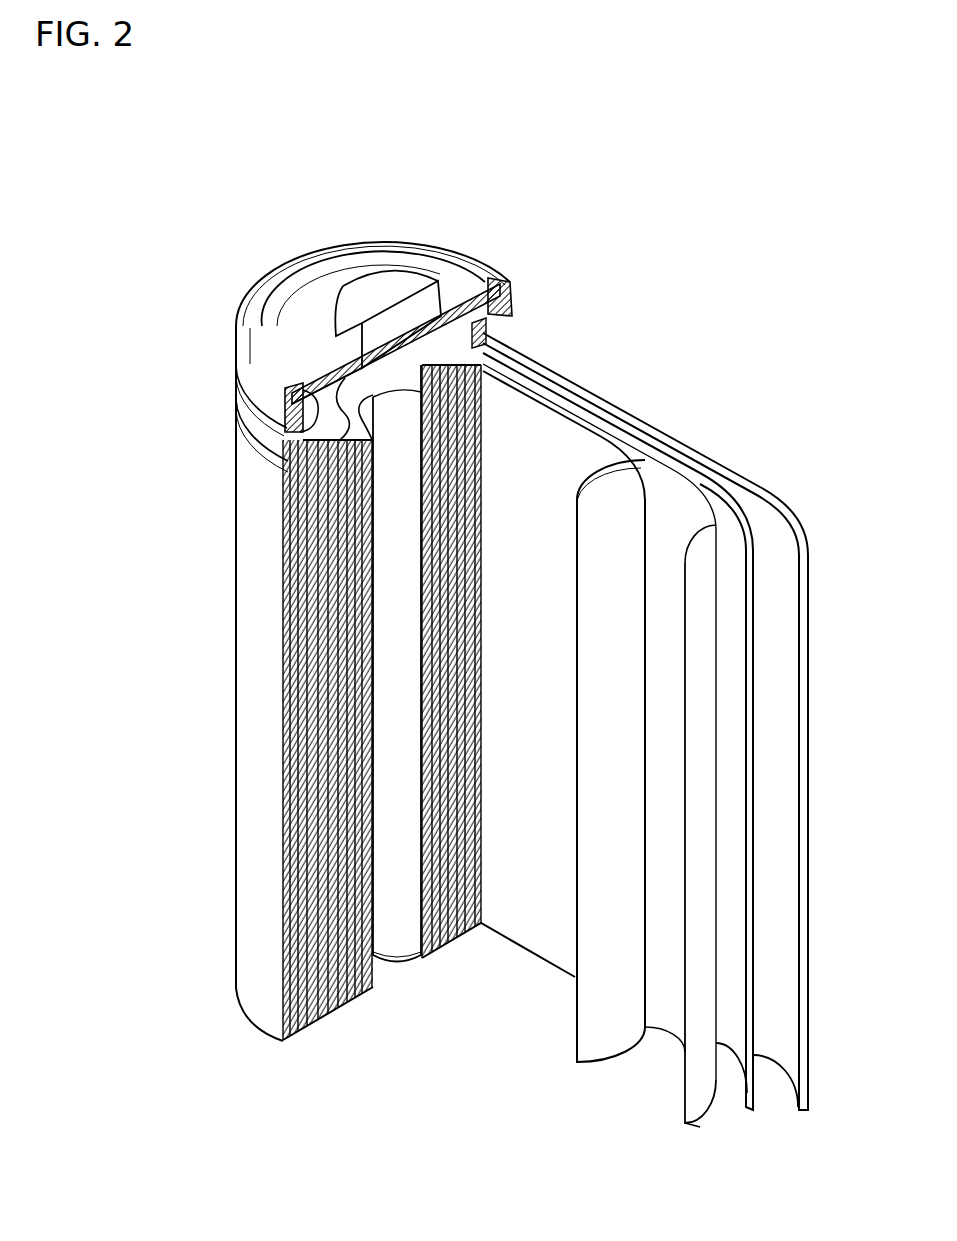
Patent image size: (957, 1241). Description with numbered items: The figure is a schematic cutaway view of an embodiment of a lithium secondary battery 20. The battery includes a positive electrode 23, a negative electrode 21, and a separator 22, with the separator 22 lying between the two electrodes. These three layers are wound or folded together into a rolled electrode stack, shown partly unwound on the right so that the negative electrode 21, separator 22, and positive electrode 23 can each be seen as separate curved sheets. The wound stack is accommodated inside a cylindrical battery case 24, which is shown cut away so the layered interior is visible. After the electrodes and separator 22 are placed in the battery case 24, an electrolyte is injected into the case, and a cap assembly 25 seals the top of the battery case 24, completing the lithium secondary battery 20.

The lithium secondary battery 20 is at (607, 274).
The negative electrode 21 is at (796, 528).
The separator 22 is at (585, 418).
The positive electrode 23 is at (672, 473).
The battery case 24 is at (247, 686).
The cap assembly 25 is at (372, 290).